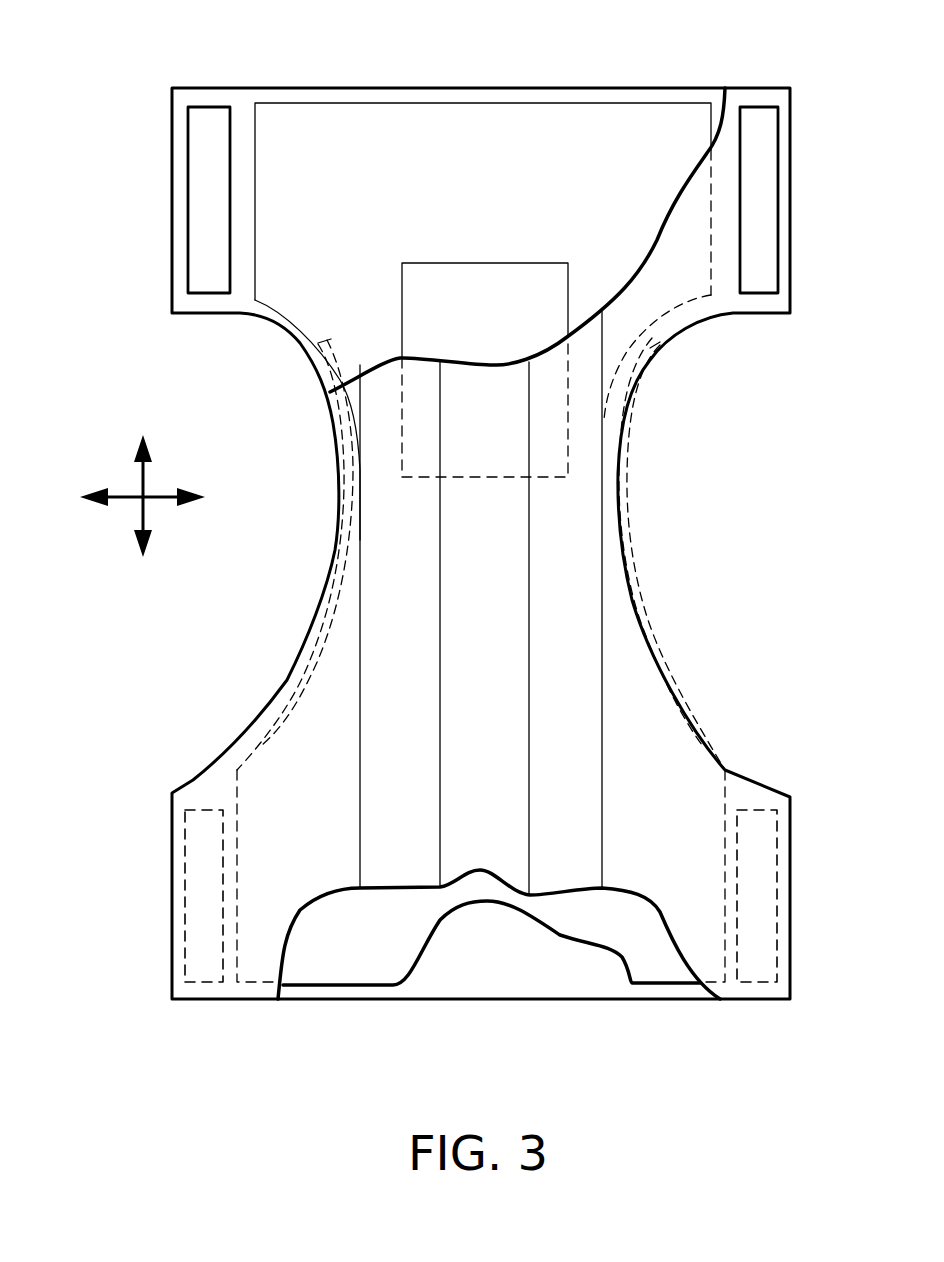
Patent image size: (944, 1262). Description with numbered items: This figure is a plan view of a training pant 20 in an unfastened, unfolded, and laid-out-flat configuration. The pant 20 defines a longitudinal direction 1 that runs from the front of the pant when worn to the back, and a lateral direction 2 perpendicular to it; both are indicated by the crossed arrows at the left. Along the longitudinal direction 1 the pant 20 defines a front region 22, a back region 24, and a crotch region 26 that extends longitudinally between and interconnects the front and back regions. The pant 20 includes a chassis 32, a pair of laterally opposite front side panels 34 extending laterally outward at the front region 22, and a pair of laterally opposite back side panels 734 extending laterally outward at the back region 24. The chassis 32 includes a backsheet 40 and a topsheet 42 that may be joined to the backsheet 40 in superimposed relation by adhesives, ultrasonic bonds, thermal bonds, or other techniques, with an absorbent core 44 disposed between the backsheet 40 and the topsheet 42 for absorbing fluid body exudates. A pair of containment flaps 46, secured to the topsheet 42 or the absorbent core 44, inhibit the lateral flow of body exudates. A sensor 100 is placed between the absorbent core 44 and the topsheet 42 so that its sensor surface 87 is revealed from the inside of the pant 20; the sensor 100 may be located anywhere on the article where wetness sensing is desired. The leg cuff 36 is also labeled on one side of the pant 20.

The training pant 20 is at (195, 50).
The front region 22 is at (472, 228).
The back region 24 is at (472, 823).
The crotch region 26 is at (472, 572).
The chassis 32 is at (377, 650).
The front side panels 34 is at (237, 99).
The right leg cuff 36 is at (627, 535).
The backsheet 40 is at (512, 985).
The topsheet 42 is at (688, 857).
The absorbent core 44 is at (608, 120).
The containment flaps 46 is at (373, 733).
The sensor surface 87 is at (421, 300).
The sensor 100 is at (542, 279).
The back side panels 734 is at (202, 990).
The longitudinal direction 1 is at (137, 470).
The lateral direction 2 is at (150, 498).